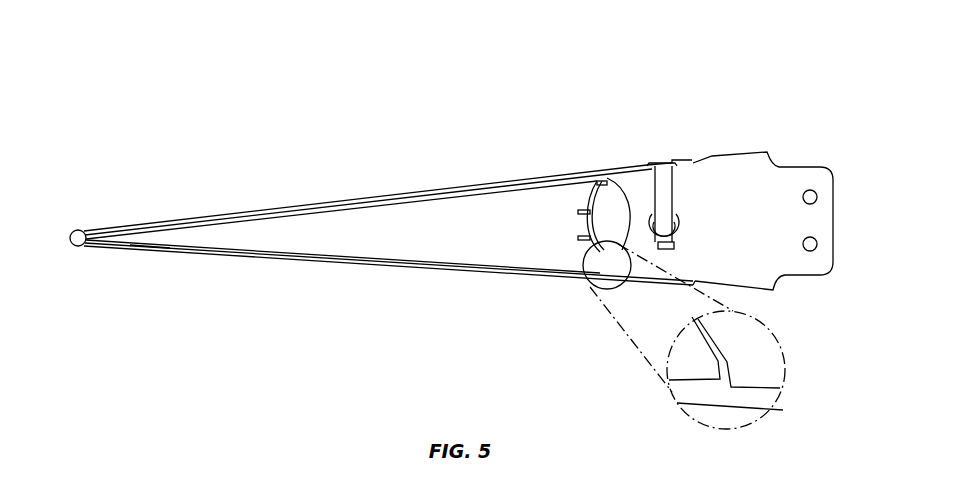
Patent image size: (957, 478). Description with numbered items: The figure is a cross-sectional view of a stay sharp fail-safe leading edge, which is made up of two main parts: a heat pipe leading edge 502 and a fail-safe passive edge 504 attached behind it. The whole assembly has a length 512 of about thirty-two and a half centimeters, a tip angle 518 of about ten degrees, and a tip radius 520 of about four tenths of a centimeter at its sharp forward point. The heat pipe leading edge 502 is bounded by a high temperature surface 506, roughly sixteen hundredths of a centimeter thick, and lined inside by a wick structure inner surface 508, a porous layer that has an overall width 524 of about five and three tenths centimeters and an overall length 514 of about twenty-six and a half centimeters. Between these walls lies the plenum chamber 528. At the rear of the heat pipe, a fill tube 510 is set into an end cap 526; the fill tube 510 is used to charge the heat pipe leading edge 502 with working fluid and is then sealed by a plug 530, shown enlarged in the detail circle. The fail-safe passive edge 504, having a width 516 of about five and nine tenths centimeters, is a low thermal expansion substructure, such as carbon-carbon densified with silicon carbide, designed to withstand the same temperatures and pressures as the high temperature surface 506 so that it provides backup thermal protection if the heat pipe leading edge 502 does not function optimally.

The heat pipe leading edge 502 is at (408, 186).
The fail-safe passive edge 504 is at (740, 168).
The high temperature surface 506 is at (390, 270).
The wick structure inner surface 508 is at (148, 248).
The fill tube 510 is at (572, 212).
The length 512 is at (70, 227).
The overall length 514 is at (690, 157).
The width 516 is at (776, 152).
The tip angle 518 is at (243, 180).
The tip radius 520 is at (75, 247).
The overall width 524 is at (690, 287).
The end cap 526 is at (703, 338).
The plenum chamber 528 is at (350, 232).
The plug 530 is at (584, 236).